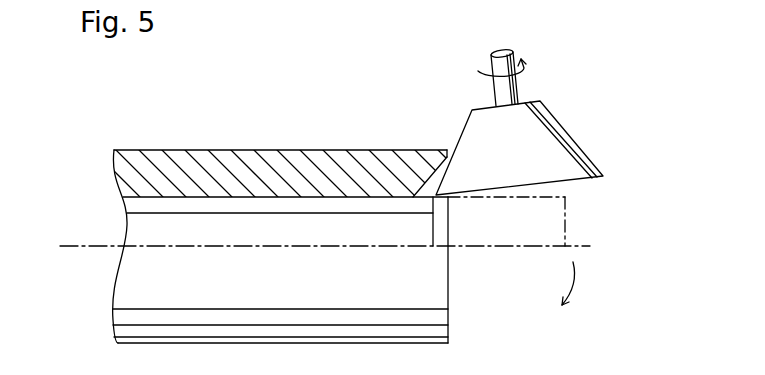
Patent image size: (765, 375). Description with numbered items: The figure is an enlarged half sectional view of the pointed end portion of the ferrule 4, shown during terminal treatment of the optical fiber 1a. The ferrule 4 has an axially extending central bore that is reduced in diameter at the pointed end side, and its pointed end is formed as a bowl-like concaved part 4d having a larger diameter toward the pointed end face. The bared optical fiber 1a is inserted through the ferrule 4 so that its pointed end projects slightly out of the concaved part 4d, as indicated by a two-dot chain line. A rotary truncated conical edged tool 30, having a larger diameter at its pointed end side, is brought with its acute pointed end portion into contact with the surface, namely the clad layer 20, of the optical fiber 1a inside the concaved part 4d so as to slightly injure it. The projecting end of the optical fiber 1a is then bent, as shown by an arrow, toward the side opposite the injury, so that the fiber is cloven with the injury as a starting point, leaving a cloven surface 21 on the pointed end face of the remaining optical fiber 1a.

The optical fiber 1a is at (207, 197).
The ferrule 4 is at (267, 160).
The concaved part 4d is at (428, 187).
The clad layer 20 is at (342, 205).
The cloven surface 21 is at (433, 223).
The rotary truncated conical edged tool 30 is at (547, 148).